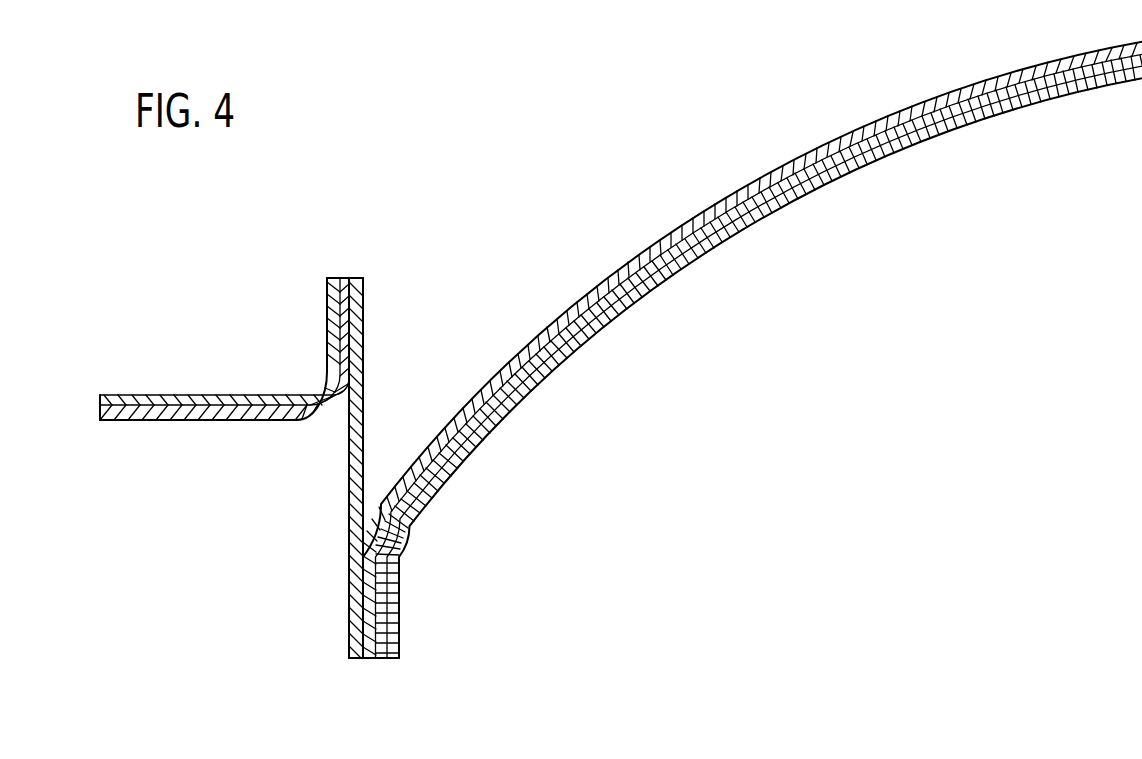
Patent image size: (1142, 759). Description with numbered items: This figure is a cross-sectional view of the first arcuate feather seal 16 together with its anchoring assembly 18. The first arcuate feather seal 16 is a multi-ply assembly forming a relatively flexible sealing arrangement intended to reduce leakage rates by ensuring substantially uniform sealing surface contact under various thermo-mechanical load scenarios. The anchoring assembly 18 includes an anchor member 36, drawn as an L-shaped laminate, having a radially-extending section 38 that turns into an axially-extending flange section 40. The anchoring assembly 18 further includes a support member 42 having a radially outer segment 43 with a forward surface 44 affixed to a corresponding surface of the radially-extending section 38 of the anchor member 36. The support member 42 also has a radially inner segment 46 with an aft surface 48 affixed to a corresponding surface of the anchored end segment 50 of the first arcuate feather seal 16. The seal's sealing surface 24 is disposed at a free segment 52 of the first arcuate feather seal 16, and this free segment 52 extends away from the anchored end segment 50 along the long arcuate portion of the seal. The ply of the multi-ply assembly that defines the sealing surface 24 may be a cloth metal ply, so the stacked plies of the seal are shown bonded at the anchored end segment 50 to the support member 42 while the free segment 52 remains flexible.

The first arcuate feather seal 16 is at (752, 349).
The anchoring assembly 18 is at (286, 496).
The sealing surface 24 is at (862, 170).
The anchor member 36 is at (211, 414).
The radially-extending section 38 is at (330, 317).
The axially-extending flange section 40 is at (175, 393).
The support member 42 is at (353, 472).
The radially outer segment 43 is at (357, 317).
The forward surface 44 is at (350, 345).
The radially inner segment 46 is at (352, 628).
The aft surface 48 is at (360, 605).
The anchored end segment 50 is at (380, 673).
The free segment 52 is at (528, 455).